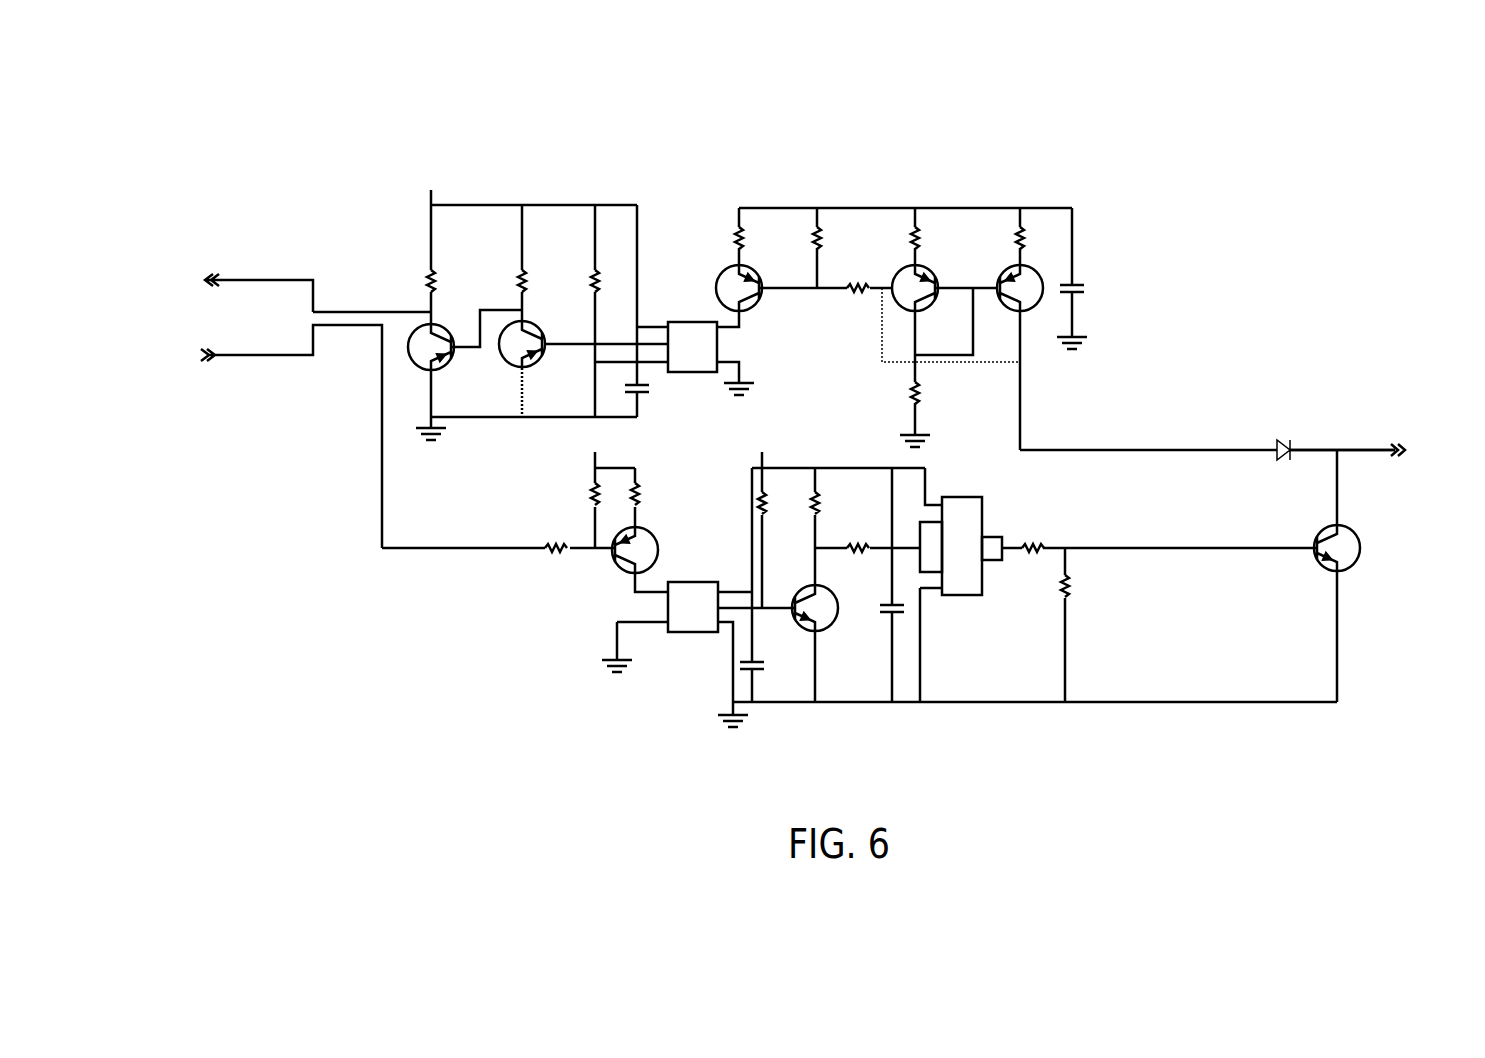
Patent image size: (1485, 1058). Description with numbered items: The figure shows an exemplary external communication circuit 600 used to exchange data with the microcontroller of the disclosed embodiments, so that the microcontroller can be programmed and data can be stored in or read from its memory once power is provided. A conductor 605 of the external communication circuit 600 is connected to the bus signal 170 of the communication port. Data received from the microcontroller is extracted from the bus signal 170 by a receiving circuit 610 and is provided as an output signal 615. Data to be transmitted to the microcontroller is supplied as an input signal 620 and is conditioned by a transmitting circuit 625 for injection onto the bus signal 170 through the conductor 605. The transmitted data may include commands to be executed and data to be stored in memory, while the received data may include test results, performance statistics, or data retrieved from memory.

The external communication circuit 600 is at (424, 156).
The circuit 610 is at (1052, 178).
The signal 615 is at (196, 281).
The signal 620 is at (196, 359).
The circuit 625 is at (675, 699).
The conductor 605 is at (1358, 448).
The bus signal 170 is at (1425, 432).